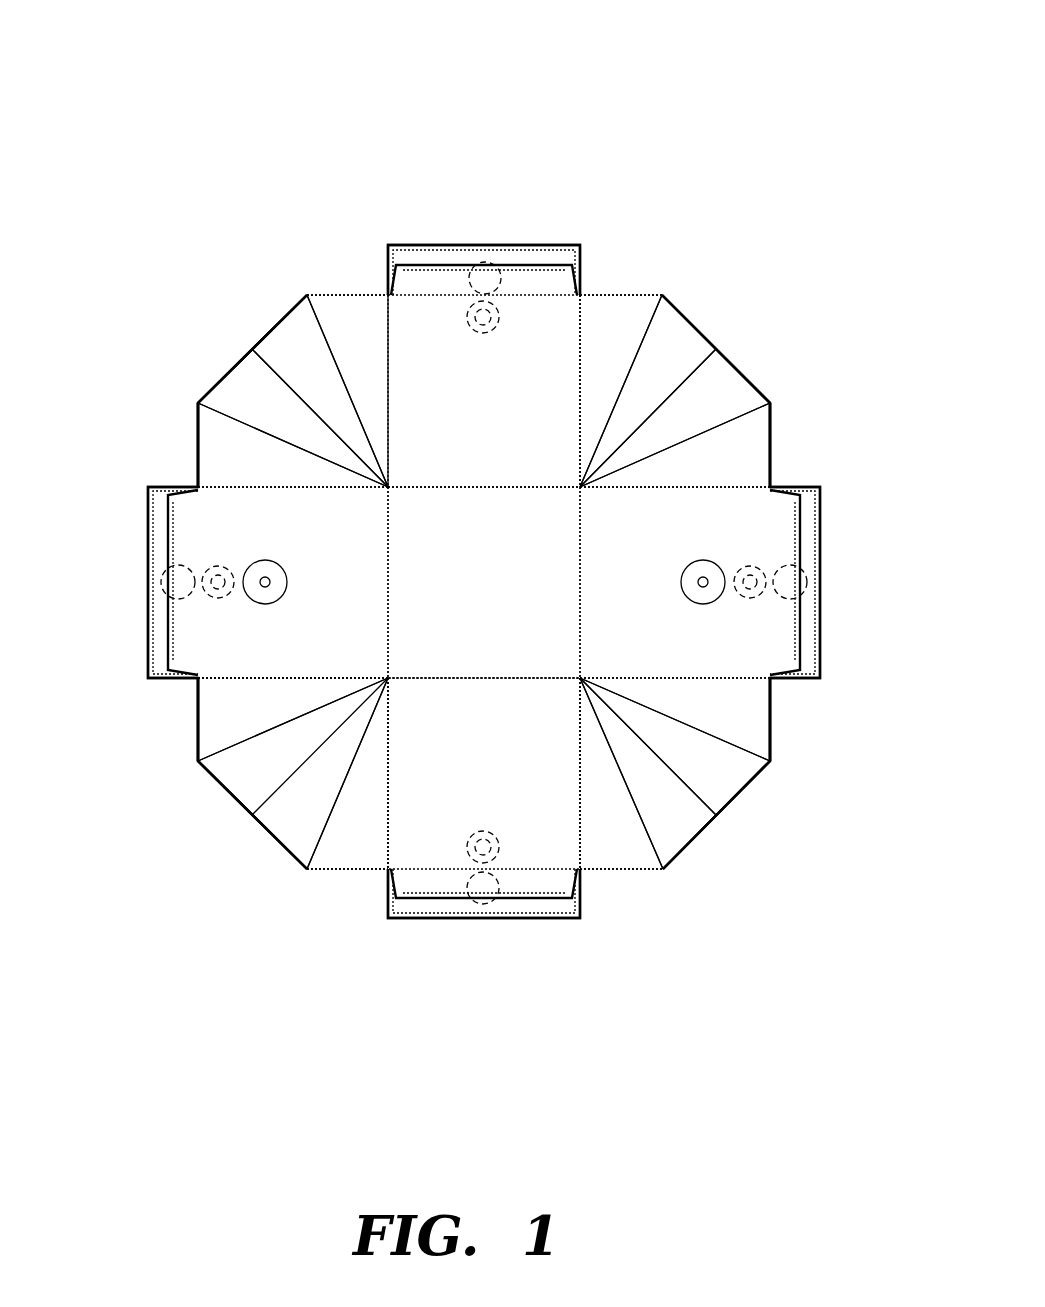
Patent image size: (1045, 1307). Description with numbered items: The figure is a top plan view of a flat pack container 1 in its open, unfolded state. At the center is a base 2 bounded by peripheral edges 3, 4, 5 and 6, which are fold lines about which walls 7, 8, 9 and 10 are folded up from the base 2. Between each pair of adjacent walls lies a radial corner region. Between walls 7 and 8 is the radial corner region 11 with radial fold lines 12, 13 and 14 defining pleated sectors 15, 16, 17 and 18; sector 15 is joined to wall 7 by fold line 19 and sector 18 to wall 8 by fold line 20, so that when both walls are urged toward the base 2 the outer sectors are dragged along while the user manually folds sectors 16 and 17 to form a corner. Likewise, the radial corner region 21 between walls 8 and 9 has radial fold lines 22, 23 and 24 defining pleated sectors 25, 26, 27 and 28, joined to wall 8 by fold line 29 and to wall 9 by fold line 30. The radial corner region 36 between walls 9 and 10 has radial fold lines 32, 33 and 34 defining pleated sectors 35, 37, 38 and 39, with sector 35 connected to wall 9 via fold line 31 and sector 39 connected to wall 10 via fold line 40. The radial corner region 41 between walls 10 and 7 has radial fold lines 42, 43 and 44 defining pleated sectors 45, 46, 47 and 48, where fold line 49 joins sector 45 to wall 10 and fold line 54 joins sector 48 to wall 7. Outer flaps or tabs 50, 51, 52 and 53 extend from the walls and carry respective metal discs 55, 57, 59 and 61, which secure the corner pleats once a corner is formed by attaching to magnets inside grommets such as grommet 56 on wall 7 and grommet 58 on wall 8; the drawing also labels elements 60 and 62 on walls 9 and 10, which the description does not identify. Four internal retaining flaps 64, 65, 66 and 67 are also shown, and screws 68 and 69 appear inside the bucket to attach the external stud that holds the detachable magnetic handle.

The flat pack container 1 is at (166, 56).
The base 2 is at (474, 606).
The peripheral edge 3 is at (418, 526).
The peripheral edge 4 is at (518, 490).
The peripheral edge 5 is at (560, 622).
The peripheral edge 6 is at (418, 676).
The wall 7 is at (254, 657).
The wall 8 is at (436, 457).
The wall 9 is at (674, 654).
The wall 10 is at (514, 729).
The radial corner region 11 is at (192, 240).
The radial fold line 12 is at (197, 403).
The radial fold line 13 is at (250, 350).
The radial fold line 14 is at (305, 292).
The pleated sector 15 is at (213, 468).
The pleated sector 16 is at (232, 383).
The pleated sector 17 is at (285, 318).
The pleated sector 18 is at (357, 300).
The fold line 19 is at (352, 490).
The fold line 20 is at (392, 370).
The radial corner region 21 is at (808, 276).
The radial fold line 22 is at (772, 403).
The radial fold line 23 is at (735, 375).
The radial fold line 24 is at (663, 308).
The pleated sector 25 is at (598, 310).
The pleated sector 26 is at (683, 330).
The pleated sector 27 is at (758, 365).
The pleated sector 28 is at (768, 453).
The fold line 29 is at (578, 413).
The fold line 30 is at (643, 490).
The fold line 31 is at (602, 675).
The radial fold line 32 is at (765, 762).
The radial fold line 33 is at (750, 826).
The radial fold line 34 is at (664, 875).
The pleated sector 35 is at (755, 695).
The radial corner region 36 is at (793, 939).
The pleated sector 37 is at (737, 780).
The pleated sector 38 is at (683, 832).
The pleated sector 39 is at (613, 852).
The fold line 40 is at (578, 793).
The radial corner region 41 is at (205, 980).
The radial fold line 42 is at (213, 710).
The radial fold line 43 is at (233, 785).
The radial fold line 44 is at (305, 872).
The pleated sector 45 is at (373, 855).
The pleated sector 46 is at (283, 835).
The pleated sector 47 is at (198, 762).
The pleated sector 48 is at (213, 698).
The fold line 49 is at (393, 745).
The outer flap/tab 50 is at (158, 660).
The outer flap/tab 51 is at (408, 257).
The outer flap/tab 52 is at (822, 500).
The outer flap/tab 53 is at (562, 906).
The fold line 54 is at (310, 675).
The metal disc 55 is at (165, 577).
The grommet 56 is at (210, 593).
The metal disc 57 is at (490, 258).
The grommet 58 is at (470, 305).
The metal disc 59 is at (806, 585).
The third flap fastener receiver 60 is at (760, 572).
The metal disc 61 is at (478, 903).
The fourth flap fastener receiver 62 is at (493, 857).
The internal retaining flap 64 is at (530, 270).
The internal retaining flap 65 is at (782, 627).
The internal retaining flap 66 is at (440, 890).
The internal retaining flap 67 is at (180, 535).
The screw 68 is at (702, 570).
The screw 69 is at (262, 573).